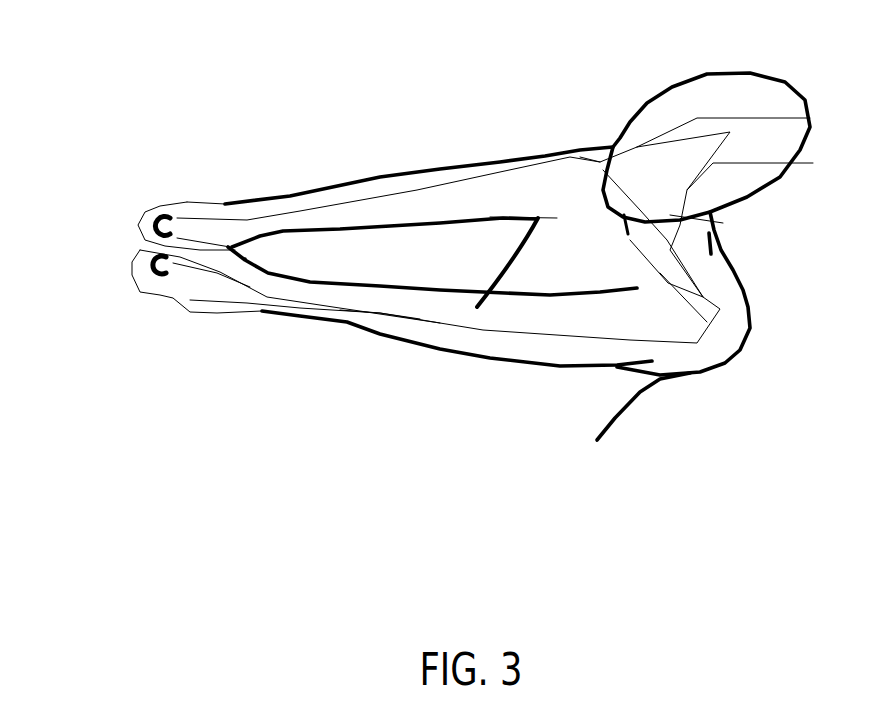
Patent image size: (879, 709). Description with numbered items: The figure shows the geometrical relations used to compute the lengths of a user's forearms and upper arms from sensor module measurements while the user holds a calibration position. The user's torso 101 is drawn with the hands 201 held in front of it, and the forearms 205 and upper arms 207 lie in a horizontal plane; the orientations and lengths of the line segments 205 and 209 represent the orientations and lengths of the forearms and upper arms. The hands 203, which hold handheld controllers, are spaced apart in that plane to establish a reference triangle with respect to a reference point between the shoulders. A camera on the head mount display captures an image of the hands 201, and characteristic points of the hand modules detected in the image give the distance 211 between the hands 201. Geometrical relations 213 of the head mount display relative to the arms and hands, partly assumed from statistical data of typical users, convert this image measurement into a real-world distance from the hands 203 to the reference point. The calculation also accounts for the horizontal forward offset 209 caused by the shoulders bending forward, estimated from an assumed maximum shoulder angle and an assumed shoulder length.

The torso 101 is at (562, 392).
The hands 201 is at (140, 243).
The hands 203 is at (250, 290).
The forearms 205 is at (392, 318).
The upper arms 207 is at (527, 237).
The horizontal forward offset 209 is at (630, 240).
The distance between the hands 211 is at (245, 260).
The geometrical relations 213 is at (695, 180).